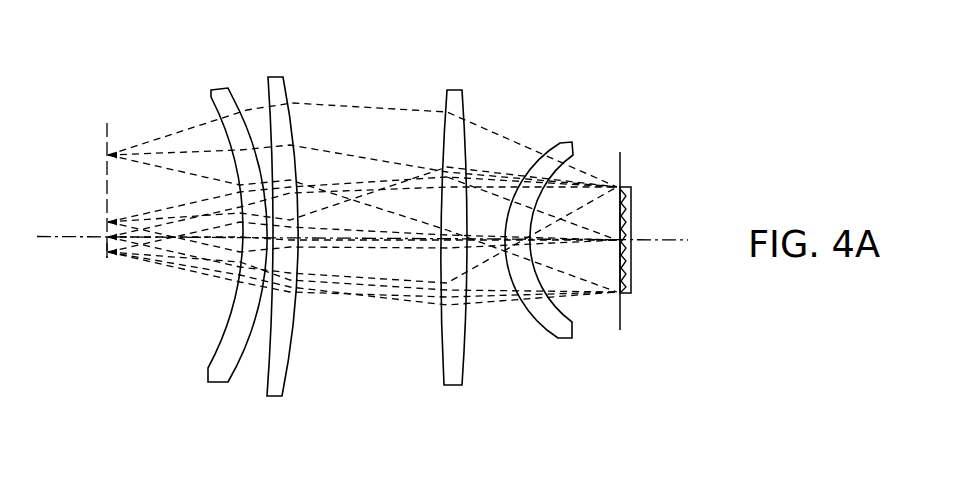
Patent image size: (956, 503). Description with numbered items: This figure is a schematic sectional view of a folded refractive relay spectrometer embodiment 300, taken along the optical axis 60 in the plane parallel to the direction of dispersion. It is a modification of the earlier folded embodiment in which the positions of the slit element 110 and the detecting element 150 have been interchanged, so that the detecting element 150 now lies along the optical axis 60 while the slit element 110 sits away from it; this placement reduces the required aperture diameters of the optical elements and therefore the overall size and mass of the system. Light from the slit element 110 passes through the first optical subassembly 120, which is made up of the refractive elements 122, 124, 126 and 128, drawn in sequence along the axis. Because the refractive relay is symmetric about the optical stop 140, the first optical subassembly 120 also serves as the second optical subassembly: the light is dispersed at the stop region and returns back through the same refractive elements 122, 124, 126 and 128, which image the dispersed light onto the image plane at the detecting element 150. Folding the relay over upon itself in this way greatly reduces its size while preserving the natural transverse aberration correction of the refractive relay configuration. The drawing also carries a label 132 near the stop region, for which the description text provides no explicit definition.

The folded refractive relay spectrometer embodiment 300 is at (146, 45).
The optical axis 60 is at (68, 236).
The slit element 110 is at (107, 133).
The detecting element 150 is at (106, 258).
The first optical subassembly 120 is at (573, 357).
The refractive element 122 is at (223, 100).
The refractive element 124 is at (277, 87).
The refractive element 126 is at (454, 102).
The refractive element 128 is at (568, 150).
The optical stop 140 is at (620, 152).
The display panel surface 132 is at (633, 288).